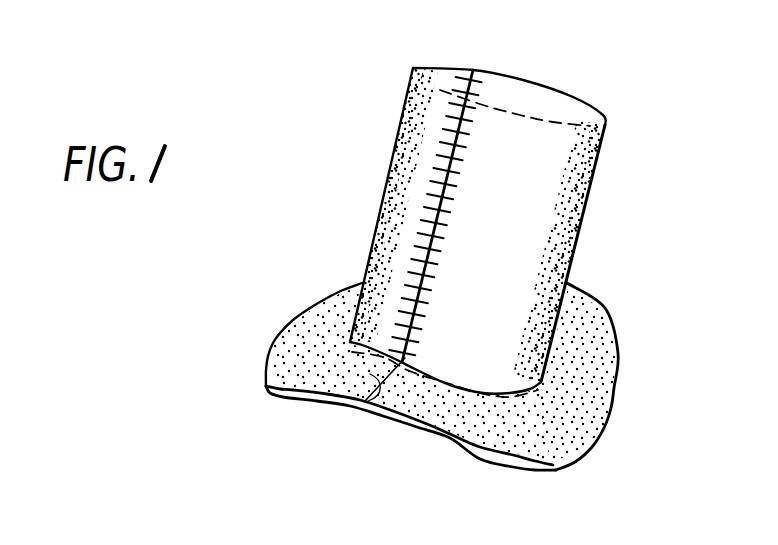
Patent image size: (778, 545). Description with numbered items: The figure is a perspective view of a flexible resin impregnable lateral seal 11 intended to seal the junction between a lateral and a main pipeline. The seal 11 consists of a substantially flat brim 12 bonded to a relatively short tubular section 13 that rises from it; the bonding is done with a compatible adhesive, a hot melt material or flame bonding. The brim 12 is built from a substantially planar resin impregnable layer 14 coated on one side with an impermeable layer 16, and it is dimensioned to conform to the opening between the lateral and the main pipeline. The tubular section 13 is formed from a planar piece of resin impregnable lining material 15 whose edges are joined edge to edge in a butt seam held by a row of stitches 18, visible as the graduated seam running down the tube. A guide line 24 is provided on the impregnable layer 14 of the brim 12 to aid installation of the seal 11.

The seal 11 is at (580, 274).
The brim 12 is at (280, 333).
The tubular section 13 is at (565, 92).
The resin impregnable layer 14 is at (597, 357).
The resin impregnable lining material 15 is at (555, 198).
The impermeable layer 16 is at (552, 469).
The row of stitches 18 is at (467, 88).
The guide line 24 is at (365, 401).